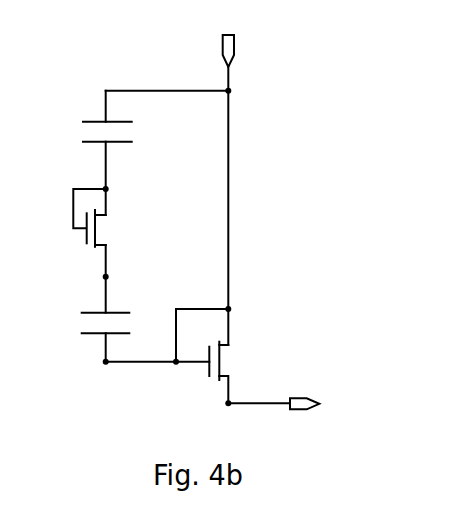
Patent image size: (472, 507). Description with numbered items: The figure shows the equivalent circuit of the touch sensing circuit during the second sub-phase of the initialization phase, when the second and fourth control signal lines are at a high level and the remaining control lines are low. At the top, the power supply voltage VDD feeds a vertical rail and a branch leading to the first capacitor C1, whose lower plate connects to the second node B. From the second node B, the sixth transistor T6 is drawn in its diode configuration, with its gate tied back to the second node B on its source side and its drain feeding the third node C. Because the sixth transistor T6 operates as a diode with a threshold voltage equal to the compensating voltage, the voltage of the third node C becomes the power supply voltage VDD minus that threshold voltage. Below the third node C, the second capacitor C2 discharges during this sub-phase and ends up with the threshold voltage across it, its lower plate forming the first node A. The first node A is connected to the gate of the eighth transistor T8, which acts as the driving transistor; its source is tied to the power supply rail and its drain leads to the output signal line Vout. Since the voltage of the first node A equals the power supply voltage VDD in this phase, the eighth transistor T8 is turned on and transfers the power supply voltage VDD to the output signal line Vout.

The power supply voltage VDD is at (231, 50).
The first capacitor C1 is at (125, 137).
The second node B is at (117, 190).
The sixth transistor T6 is at (107, 218).
The third node C is at (116, 278).
The second capacitor C2 is at (121, 320).
The first node A is at (117, 351).
The eighth transistor T8 is at (229, 373).
The output signal line Vout is at (300, 406).